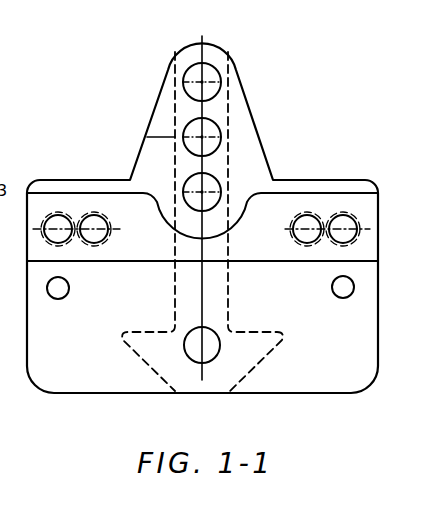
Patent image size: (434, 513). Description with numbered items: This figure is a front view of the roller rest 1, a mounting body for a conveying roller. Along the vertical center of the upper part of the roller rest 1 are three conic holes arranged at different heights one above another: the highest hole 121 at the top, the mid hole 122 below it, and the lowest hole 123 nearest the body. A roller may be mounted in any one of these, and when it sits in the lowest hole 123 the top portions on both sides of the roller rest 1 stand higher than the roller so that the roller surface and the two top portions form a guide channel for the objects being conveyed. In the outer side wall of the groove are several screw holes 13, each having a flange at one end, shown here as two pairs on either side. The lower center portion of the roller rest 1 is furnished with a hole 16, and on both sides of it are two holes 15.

The roller rest 1 is at (290, 182).
The screw holes 13 is at (60, 215).
The holes 15 is at (59, 299).
The hole 16 is at (195, 361).
The highest hole 121 is at (215, 70).
The mid hole 122 is at (213, 127).
The lowest hole 123 is at (212, 183).